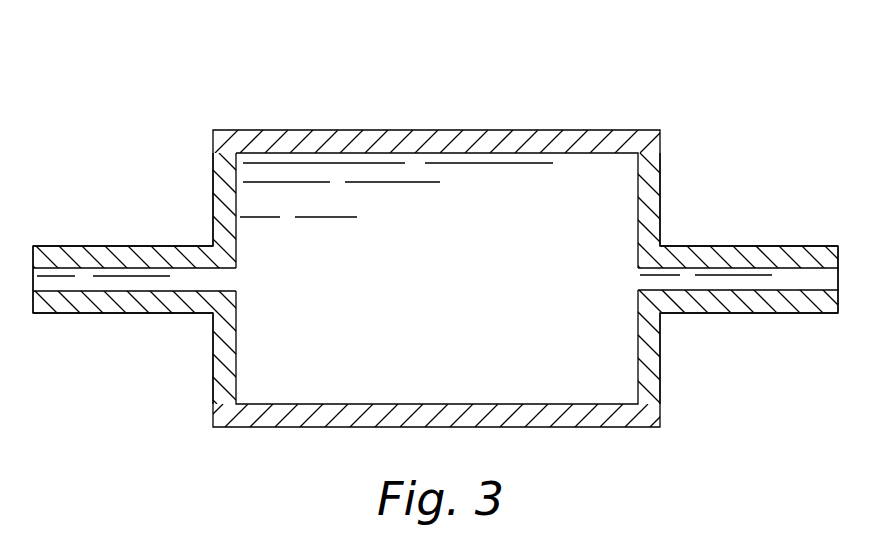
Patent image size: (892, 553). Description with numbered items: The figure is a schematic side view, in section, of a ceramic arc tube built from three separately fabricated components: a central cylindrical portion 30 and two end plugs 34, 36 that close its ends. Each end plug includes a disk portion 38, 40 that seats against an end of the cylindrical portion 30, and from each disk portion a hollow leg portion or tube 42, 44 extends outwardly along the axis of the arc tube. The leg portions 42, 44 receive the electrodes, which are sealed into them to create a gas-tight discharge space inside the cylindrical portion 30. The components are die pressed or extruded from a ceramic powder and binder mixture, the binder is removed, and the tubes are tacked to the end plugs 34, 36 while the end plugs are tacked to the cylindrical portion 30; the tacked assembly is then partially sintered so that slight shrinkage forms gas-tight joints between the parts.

The cylindrical portion 30 is at (392, 118).
The end plug 34 is at (198, 172).
The end plug 36 is at (658, 177).
The disk portion 38 is at (213, 214).
The disk portion 40 is at (658, 226).
The leg portion 42 is at (139, 313).
The leg portion 44 is at (799, 312).